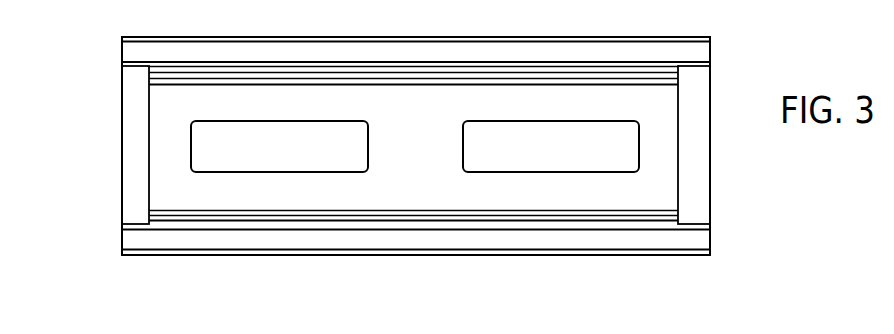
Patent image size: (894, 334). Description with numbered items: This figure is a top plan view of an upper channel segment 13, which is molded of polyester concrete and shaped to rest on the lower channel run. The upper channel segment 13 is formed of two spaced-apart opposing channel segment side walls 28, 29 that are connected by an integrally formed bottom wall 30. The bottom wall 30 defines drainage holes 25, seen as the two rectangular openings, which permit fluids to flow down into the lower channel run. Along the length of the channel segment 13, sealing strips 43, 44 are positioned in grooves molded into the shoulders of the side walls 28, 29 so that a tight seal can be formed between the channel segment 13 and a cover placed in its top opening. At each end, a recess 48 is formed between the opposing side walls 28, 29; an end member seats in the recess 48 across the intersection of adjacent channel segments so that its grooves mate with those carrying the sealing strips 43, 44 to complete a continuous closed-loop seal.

The upper channel segment 13 is at (620, 37).
The channel segment side wall 29 is at (425, 37).
The channel segment side wall 28 is at (365, 256).
The recess 48 is at (130, 119).
The sealing strip 44 is at (280, 72).
The sealing strip 43 is at (323, 218).
The drainage hole 25 is at (268, 133).
The bottom wall 30 is at (437, 144).